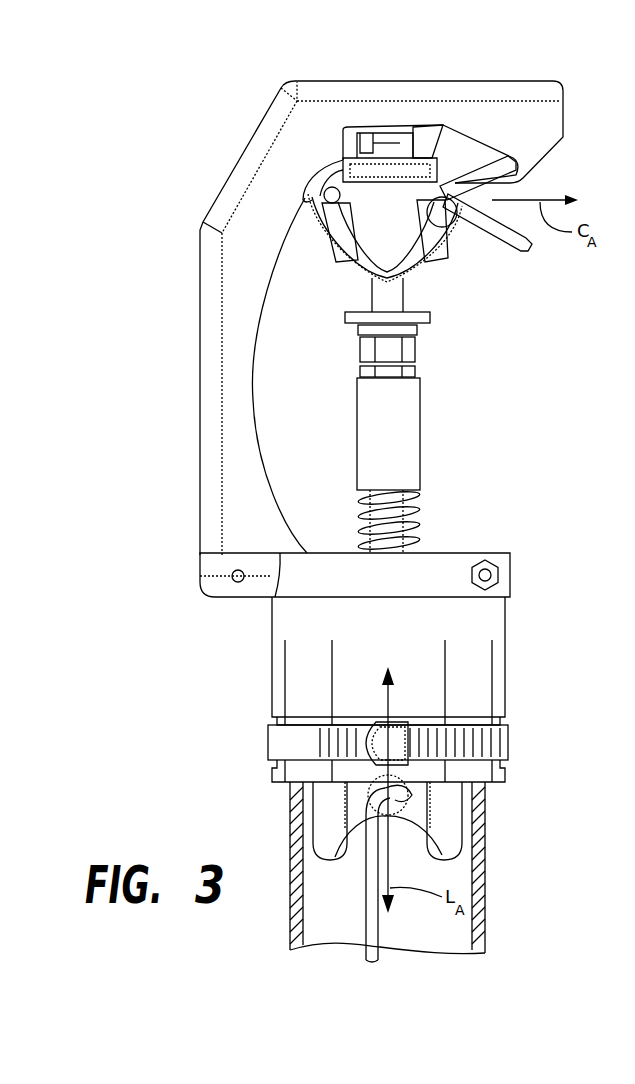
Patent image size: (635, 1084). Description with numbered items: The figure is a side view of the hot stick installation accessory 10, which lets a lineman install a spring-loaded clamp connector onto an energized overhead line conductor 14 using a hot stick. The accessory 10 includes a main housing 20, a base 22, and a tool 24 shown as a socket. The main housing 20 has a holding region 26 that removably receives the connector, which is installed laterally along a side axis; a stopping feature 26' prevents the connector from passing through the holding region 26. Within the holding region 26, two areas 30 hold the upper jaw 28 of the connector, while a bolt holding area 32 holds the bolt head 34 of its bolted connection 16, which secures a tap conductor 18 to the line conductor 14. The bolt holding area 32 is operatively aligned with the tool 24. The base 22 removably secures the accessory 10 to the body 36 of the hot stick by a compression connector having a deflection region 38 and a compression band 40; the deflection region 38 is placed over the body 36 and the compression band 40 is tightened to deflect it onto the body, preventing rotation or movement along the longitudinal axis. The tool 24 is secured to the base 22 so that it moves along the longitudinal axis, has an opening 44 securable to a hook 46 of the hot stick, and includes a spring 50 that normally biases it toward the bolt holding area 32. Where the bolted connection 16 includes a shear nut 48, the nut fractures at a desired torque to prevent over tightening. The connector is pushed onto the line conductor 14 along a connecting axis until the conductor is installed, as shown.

The hot stick installation accessory 10 is at (172, 82).
The line conductor 14 is at (443, 215).
The bolted connection 16 is at (432, 349).
The tap conductor 18 is at (338, 250).
The main housing 20 is at (222, 168).
The base 22 is at (256, 660).
The tool 24 is at (437, 470).
The holding region 26 is at (503, 119).
The stopping feature 26' is at (449, 107).
The upper jaw 28 is at (323, 172).
The areas 30 is at (303, 197).
The bolt holding area 32 is at (407, 130).
The bolt head 34 is at (383, 133).
The body 36 is at (287, 827).
The deflection region 38 is at (470, 682).
The compression band 40 is at (508, 741).
The opening 44 is at (387, 802).
The hook 46 is at (365, 912).
The shear nut 48 is at (357, 372).
The spring 50 is at (418, 515).